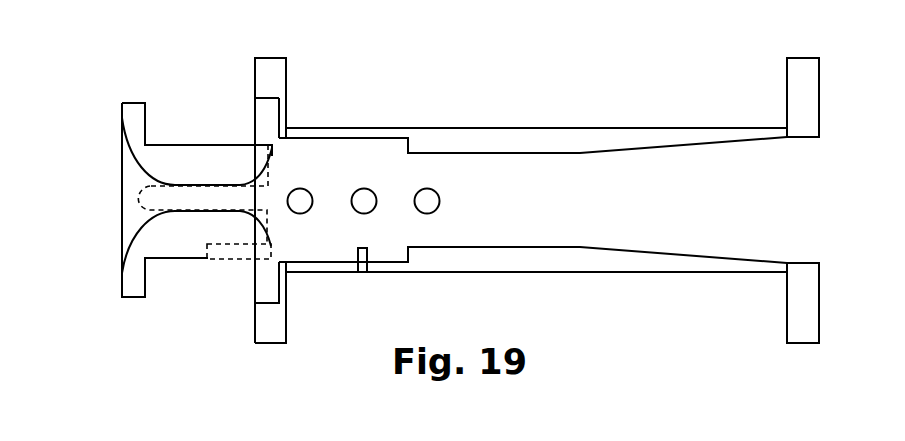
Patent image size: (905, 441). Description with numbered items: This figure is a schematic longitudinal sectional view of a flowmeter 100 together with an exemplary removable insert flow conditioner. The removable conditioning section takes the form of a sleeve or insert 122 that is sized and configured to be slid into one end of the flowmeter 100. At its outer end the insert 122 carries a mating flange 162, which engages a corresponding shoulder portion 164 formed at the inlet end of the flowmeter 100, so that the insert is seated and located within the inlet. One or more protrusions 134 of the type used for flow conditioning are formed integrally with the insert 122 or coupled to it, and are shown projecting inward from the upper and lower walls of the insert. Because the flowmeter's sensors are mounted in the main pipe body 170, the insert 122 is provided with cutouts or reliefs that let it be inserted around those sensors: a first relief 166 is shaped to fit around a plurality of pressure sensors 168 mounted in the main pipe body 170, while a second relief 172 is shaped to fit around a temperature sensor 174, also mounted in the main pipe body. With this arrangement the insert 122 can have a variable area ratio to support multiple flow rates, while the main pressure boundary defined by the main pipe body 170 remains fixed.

The flowmeter 100 is at (607, 112).
The insert 122 is at (172, 82).
The protrusions 134 is at (197, 177).
The mating flange 162 is at (130, 123).
The shoulder portion 164 is at (283, 115).
The first relief 166 is at (180, 198).
The pressure sensors 168 is at (413, 183).
The main pipe body 170 is at (539, 218).
The second relief 172 is at (223, 250).
The temperature sensor 174 is at (369, 253).